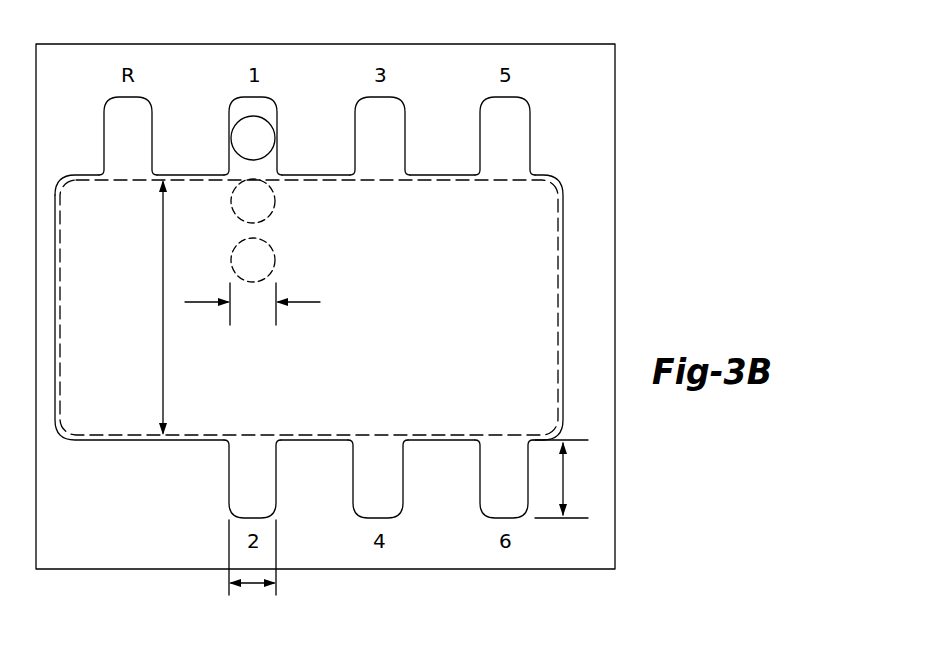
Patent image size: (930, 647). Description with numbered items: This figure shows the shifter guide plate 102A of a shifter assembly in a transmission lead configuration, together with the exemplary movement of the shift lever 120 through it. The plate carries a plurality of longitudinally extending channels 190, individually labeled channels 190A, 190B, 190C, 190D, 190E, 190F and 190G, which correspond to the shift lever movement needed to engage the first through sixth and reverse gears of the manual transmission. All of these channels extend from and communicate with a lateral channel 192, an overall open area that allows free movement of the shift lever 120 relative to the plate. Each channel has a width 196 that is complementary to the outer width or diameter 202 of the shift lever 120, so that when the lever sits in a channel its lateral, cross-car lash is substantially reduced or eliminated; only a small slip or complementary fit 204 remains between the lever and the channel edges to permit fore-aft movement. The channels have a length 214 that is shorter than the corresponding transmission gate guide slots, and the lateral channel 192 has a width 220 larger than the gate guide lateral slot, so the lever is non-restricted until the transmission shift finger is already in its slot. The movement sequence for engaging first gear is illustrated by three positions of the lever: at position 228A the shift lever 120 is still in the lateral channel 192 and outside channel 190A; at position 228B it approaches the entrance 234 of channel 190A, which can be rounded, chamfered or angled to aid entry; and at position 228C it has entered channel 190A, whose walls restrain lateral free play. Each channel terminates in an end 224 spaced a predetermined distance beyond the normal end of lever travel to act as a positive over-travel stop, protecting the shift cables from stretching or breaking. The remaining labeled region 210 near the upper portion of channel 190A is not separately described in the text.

The shift lever guide plate 102A is at (601, 43).
The channels 190 is at (568, 148).
The channel 190A is at (277, 100).
The channel 190B is at (229, 503).
The channel 190C is at (400, 100).
The channel 190D is at (353, 503).
The channel 190E is at (528, 100).
The channel 190F is at (480, 503).
The channel 190G is at (152, 100).
The lateral channel 192 is at (441, 437).
The width 196 is at (252, 569).
The outer width or diameter 202 is at (247, 316).
The complementary fit 204 is at (277, 134).
The tab top portion 210 is at (285, 5).
The length 214 is at (563, 480).
The width 220 is at (163, 354).
The end 224 is at (230, 110).
The position 228A is at (276, 262).
The position 228B is at (275, 198).
The position 228C is at (242, 121).
The entrance 234 is at (230, 173).
The shift lever 120 is at (241, 253).